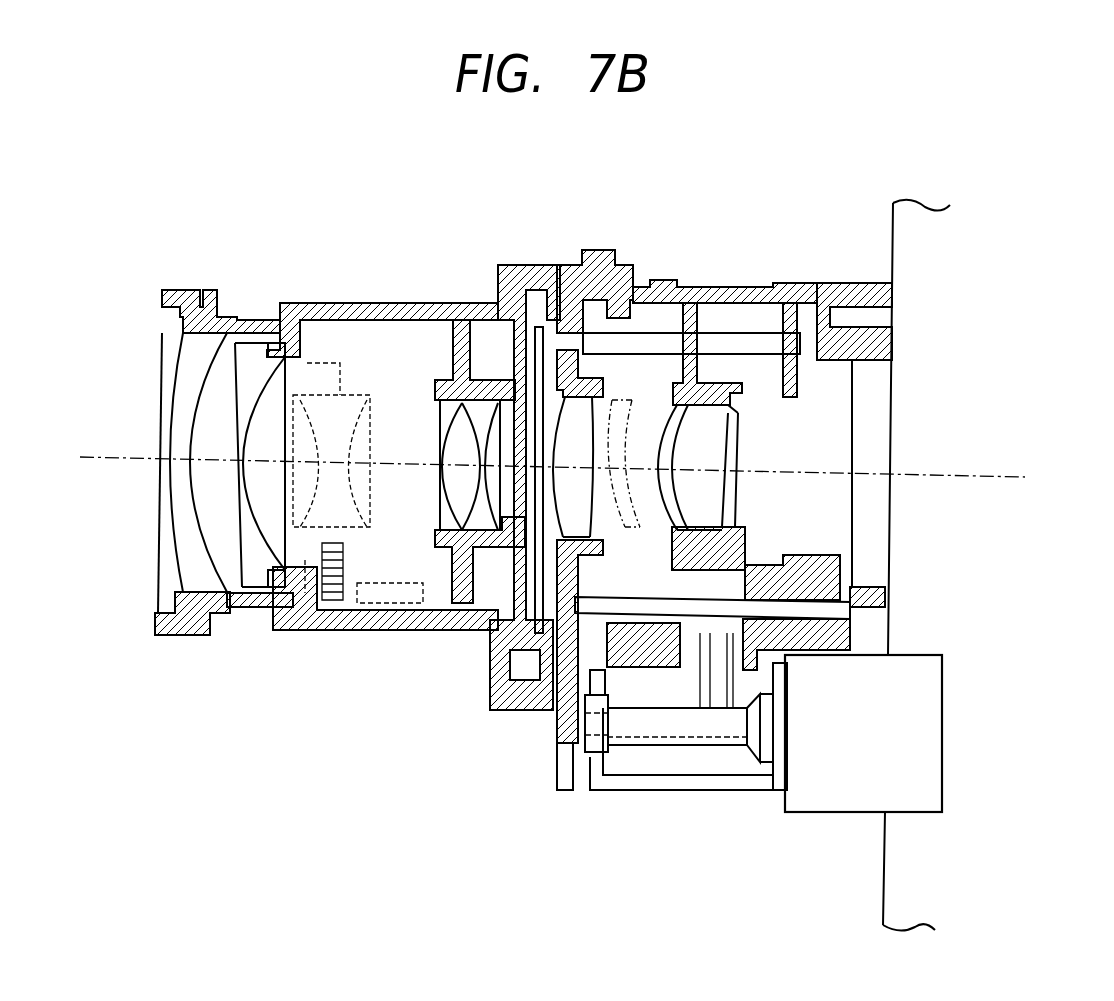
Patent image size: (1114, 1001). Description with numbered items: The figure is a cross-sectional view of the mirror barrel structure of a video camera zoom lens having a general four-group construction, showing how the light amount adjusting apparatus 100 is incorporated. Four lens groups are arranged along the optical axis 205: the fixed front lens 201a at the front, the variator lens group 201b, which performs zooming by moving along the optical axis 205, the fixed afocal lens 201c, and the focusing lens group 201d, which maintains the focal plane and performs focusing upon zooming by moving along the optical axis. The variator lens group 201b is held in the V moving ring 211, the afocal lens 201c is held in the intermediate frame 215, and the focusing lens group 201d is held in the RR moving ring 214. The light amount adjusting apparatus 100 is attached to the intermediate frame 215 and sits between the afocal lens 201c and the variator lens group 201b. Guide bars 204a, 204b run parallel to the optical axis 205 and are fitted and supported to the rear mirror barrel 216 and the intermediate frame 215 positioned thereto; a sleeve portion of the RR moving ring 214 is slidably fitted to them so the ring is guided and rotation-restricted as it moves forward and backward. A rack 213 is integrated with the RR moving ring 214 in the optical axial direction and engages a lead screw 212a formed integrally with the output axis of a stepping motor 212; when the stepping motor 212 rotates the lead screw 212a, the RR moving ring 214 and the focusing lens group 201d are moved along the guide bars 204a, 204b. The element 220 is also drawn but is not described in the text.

The light amount adjusting apparatus 100 is at (515, 698).
The front lens 201a is at (218, 363).
The variator lens group 201b is at (427, 400).
The afocal lens 201c is at (603, 405).
The focusing lens group 201d is at (712, 398).
The guide bar 204a is at (594, 333).
The guide bar 204b is at (892, 622).
The optical axis 205 is at (960, 482).
The V moving ring 211 is at (493, 400).
The stepping motor 212 is at (805, 802).
The lead screw 212a is at (650, 762).
The rack 213 is at (690, 708).
The RR moving ring 214 is at (753, 537).
The intermediate frame 215 is at (560, 265).
The rear mirror barrel 216 is at (845, 290).
The camera body 220 is at (892, 240).